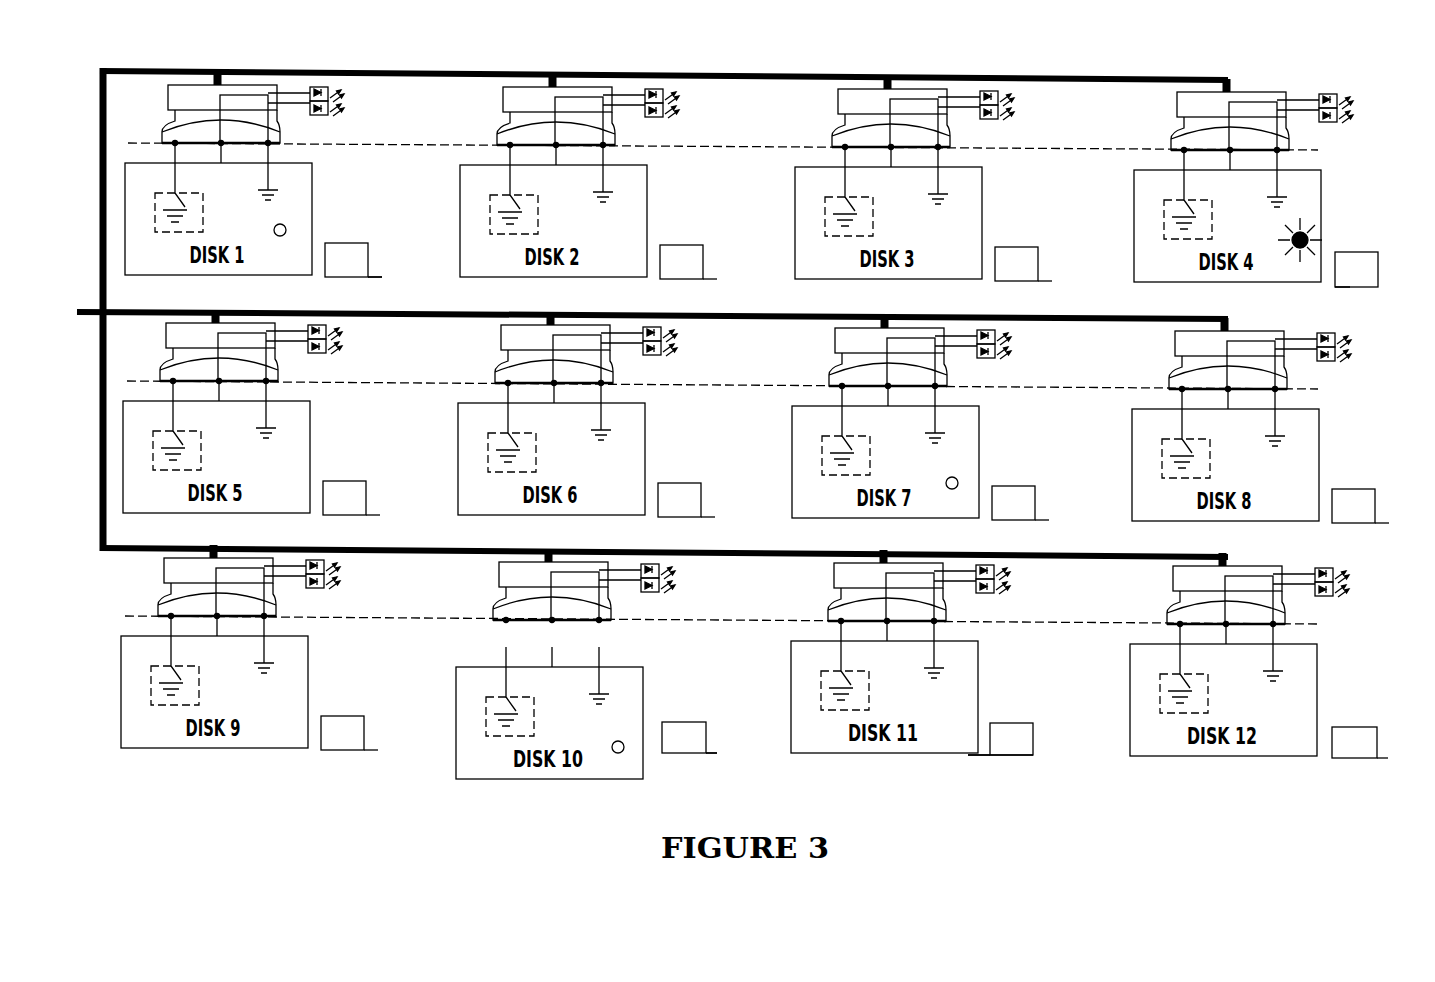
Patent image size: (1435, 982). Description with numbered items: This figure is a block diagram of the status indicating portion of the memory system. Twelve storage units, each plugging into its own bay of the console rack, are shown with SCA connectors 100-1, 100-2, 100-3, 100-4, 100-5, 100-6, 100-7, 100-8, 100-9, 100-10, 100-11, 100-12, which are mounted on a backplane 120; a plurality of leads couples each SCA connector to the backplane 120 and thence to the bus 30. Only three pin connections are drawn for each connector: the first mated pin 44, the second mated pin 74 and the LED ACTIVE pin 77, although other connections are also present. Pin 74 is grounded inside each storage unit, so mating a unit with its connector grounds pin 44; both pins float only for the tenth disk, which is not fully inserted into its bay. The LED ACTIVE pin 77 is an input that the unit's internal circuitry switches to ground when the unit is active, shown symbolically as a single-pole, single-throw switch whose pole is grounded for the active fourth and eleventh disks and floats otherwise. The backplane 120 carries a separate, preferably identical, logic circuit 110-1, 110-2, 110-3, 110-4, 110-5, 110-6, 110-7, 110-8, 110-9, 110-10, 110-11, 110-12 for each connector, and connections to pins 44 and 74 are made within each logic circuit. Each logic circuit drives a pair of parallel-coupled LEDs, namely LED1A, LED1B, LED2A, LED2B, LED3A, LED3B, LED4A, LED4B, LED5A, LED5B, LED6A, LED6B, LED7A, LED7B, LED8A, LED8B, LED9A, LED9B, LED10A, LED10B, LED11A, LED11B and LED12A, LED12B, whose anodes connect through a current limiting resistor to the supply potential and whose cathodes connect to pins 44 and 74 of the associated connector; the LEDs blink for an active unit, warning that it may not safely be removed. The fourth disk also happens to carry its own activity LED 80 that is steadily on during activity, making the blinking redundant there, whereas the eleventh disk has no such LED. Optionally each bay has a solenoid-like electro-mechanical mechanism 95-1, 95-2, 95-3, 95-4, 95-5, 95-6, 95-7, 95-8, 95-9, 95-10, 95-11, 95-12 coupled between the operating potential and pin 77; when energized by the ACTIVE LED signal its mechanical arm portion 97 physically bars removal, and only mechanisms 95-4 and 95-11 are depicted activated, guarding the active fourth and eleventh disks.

The bus 30 is at (80, 305).
The backplane 120 is at (688, 72).
The LED ACTIVE pin 77 is at (679, 439).
The MATED1 pin 44 is at (709, 418).
The MATED2 pin 74 is at (759, 423).
The activity LED 80 is at (297, 230).
The mechanical arm portion 97 is at (372, 277).
The SCA connector 100-1 is at (196, 109).
The SCA connector 100-2 is at (531, 111).
The SCA connector 100-3 is at (866, 113).
The SCA connector 100-4 is at (1205, 116).
The SCA connector 100-5 is at (194, 347).
The SCA connector 100-6 is at (529, 349).
The SCA connector 100-7 is at (863, 352).
The SCA connector 100-8 is at (1203, 355).
The SCA connector 100-9 is at (192, 582).
The SCA connector 100-10 is at (527, 586).
The SCA connector 100-11 is at (862, 587).
The SCA connector 100-12 is at (1201, 590).
The logic circuit 110-1 is at (306, 115).
The logic circuit 110-2 is at (641, 117).
The logic circuit 110-3 is at (976, 119).
The logic circuit 110-4 is at (1315, 122).
The logic circuit 110-5 is at (304, 353).
The logic circuit 110-6 is at (639, 355).
The logic circuit 110-7 is at (973, 358).
The logic circuit 110-8 is at (1313, 361).
The logic circuit 110-9 is at (302, 588).
The logic circuit 110-10 is at (643, 598).
The logic circuit 110-11 is at (978, 598).
The logic circuit 110-12 is at (1318, 604).
The LED LED1A is at (363, 94).
The LED LED1B is at (363, 116).
The LED LED2A is at (691, 96).
The LED LED2B is at (698, 118).
The LED LED3A is at (1033, 98).
The LED LED3B is at (1033, 120).
The LED LED4A is at (1372, 101).
The LED LED4B is at (1372, 123).
The LED LED5A is at (361, 332).
The LED LED5B is at (361, 354).
The LED LED6A is at (696, 334).
The LED LED6B is at (696, 356).
The LED LED7A is at (1030, 337).
The LED LED7B is at (1030, 359).
The LED LED8A is at (1370, 340).
The LED LED8B is at (1370, 362).
The LED LED9A is at (359, 567).
The LED LED9B is at (359, 589).
The LED LED10A is at (700, 572).
The LED LED10B is at (700, 594).
The LED LED11A is at (1035, 573).
The LED LED11B is at (1035, 595).
The LED LED12A is at (1374, 576).
The LED LED12B is at (1374, 598).
The electro-mechanical mechanism 95-1 is at (353, 260).
The electro-mechanical mechanism 95-2 is at (688, 262).
The electro-mechanical mechanism 95-3 is at (1023, 264).
The electro-mechanical mechanism 95-4 is at (1356, 269).
The electro-mechanical mechanism 95-5 is at (351, 498).
The electro-mechanical mechanism 95-6 is at (686, 500).
The electro-mechanical mechanism 95-7 is at (1020, 503).
The electro-mechanical mechanism 95-8 is at (1360, 506).
The electro-mechanical mechanism 95-9 is at (349, 733).
The electro-mechanical mechanism 95-10 is at (695, 717).
The electro-mechanical mechanism 95-11 is at (1014, 722).
The electro-mechanical mechanism 95-12 is at (1366, 723).